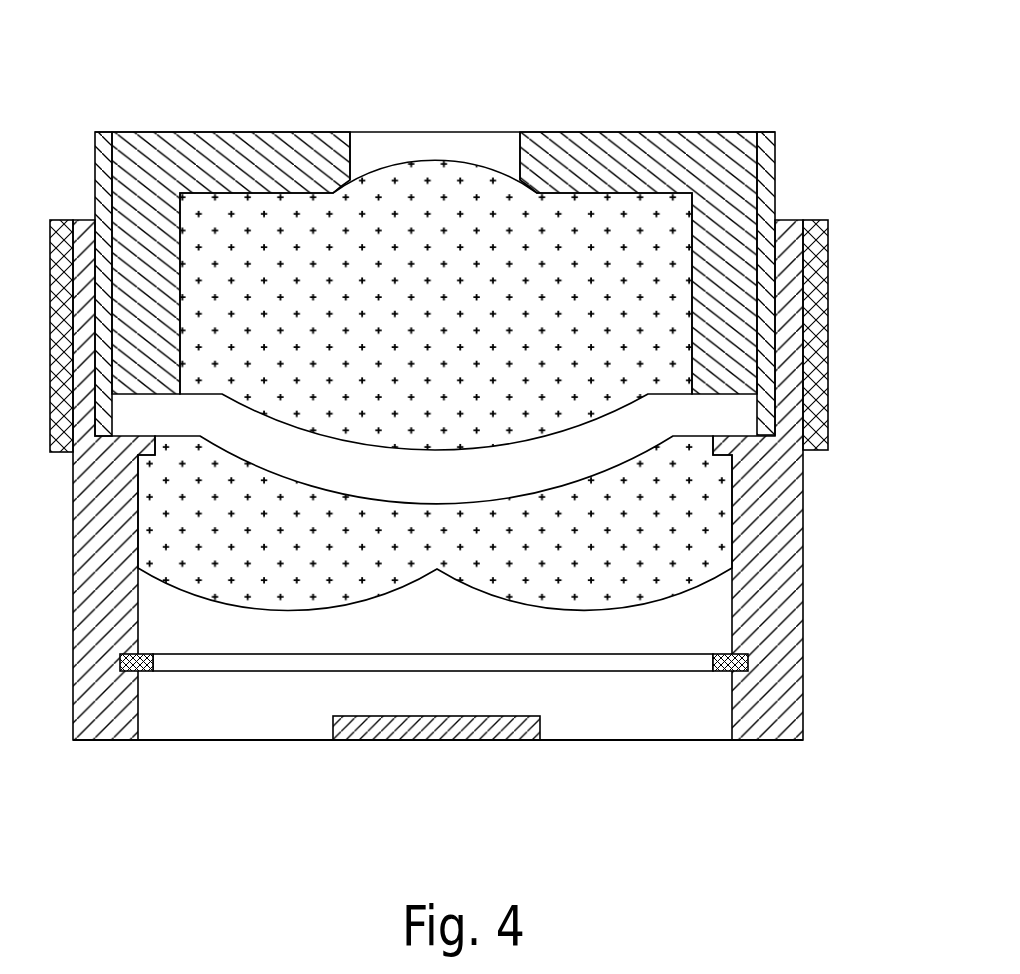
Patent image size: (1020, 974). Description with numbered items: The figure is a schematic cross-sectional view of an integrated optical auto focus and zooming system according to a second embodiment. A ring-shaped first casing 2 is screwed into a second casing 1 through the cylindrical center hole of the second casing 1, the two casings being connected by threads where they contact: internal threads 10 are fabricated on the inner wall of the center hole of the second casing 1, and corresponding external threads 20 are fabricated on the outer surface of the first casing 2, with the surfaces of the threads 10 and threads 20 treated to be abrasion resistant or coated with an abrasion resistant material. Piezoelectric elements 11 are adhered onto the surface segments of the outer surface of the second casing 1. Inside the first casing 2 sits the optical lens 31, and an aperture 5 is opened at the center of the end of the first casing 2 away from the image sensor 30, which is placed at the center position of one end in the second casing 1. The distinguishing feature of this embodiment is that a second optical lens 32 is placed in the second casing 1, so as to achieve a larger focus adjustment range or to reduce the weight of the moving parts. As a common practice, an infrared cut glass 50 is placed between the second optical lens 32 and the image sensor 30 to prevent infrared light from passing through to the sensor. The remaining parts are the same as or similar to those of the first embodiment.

The second casing 1 is at (610, 708).
The first casing 2 is at (660, 152).
The aperture 5 is at (428, 142).
The internal threads 10 is at (760, 395).
The piezoelectric elements 11 is at (818, 400).
The external threads 20 is at (780, 152).
The image sensor 30 is at (422, 728).
The optical lens 31 is at (540, 275).
The second optical lens 32 is at (217, 532).
The infrared cut glass 50 is at (697, 662).